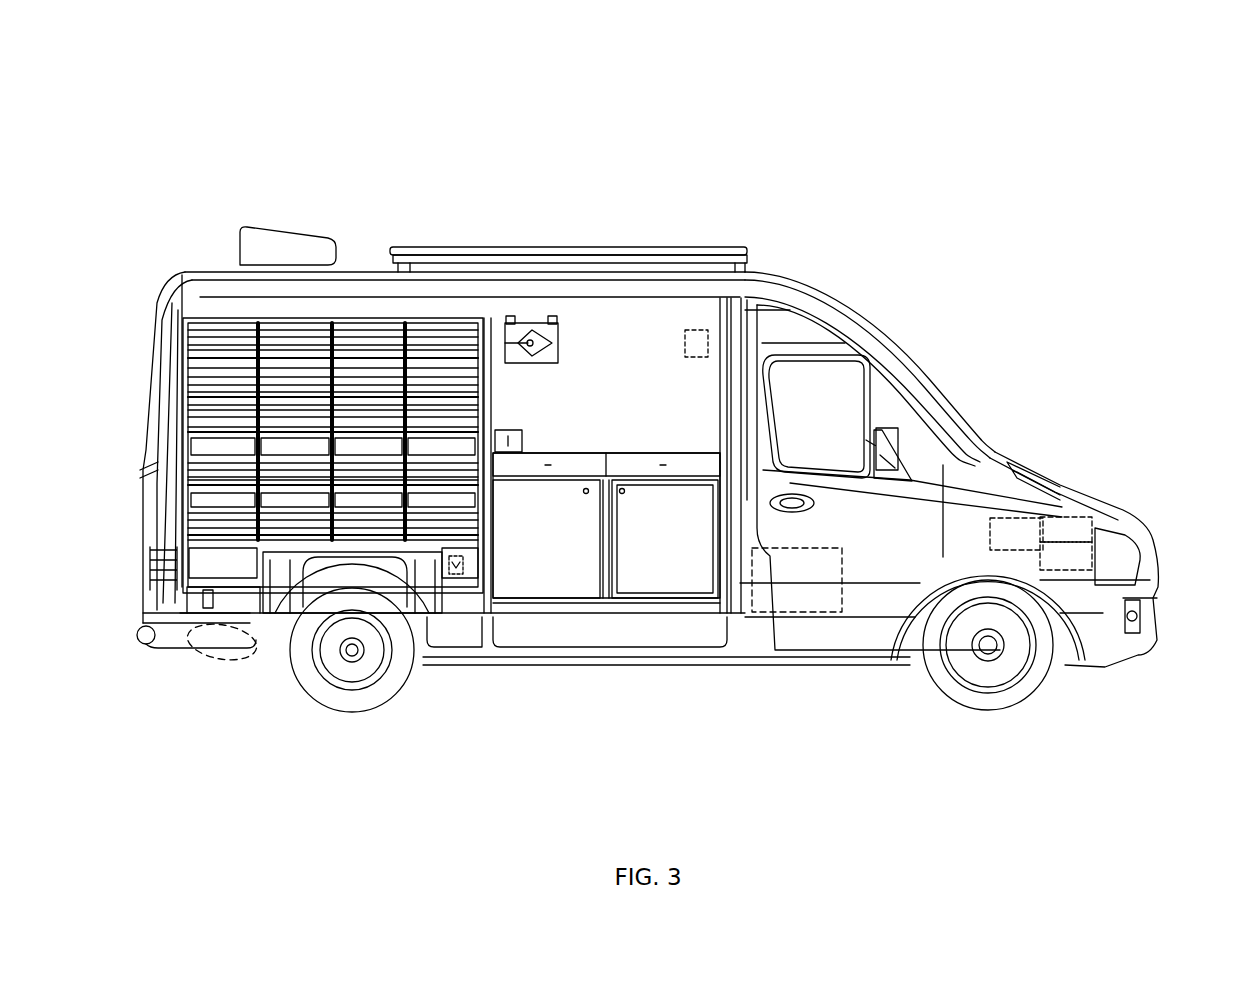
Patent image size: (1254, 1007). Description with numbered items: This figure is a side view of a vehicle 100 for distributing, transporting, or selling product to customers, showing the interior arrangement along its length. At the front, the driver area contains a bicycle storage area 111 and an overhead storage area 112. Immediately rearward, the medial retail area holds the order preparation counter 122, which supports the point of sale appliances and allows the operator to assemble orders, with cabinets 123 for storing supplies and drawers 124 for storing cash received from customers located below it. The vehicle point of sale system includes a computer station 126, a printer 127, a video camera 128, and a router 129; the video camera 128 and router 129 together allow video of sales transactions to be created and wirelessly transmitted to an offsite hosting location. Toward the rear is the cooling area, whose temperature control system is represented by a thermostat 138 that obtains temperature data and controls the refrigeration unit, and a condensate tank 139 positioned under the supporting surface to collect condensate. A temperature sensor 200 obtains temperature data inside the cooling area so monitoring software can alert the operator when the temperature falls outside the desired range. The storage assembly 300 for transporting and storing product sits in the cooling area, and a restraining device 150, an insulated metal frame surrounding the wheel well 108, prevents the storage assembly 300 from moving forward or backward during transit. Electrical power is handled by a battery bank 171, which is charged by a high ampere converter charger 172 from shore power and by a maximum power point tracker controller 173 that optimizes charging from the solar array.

The vehicle 100 is at (957, 258).
The wheel well 108 is at (353, 587).
The bicycle storage area 111 is at (797, 560).
The overhead storage area 112 is at (782, 322).
The order preparation counter 122 is at (625, 452).
The cabinets 123 is at (657, 558).
The drawers 124 is at (563, 458).
The computer station 126 is at (506, 345).
The printer 127 is at (508, 442).
The video camera 128 is at (554, 318).
The router 129 is at (511, 318).
The thermostat 138 is at (700, 335).
The condensate tank 139 is at (222, 640).
The restraining device 150 is at (293, 575).
The battery bank 171 is at (1008, 538).
The high ampere converter charger 172 is at (1052, 557).
The maximum power point tracker controller 173 is at (1052, 528).
The temperature sensor 200 is at (456, 560).
The storage assembly 300 is at (352, 413).